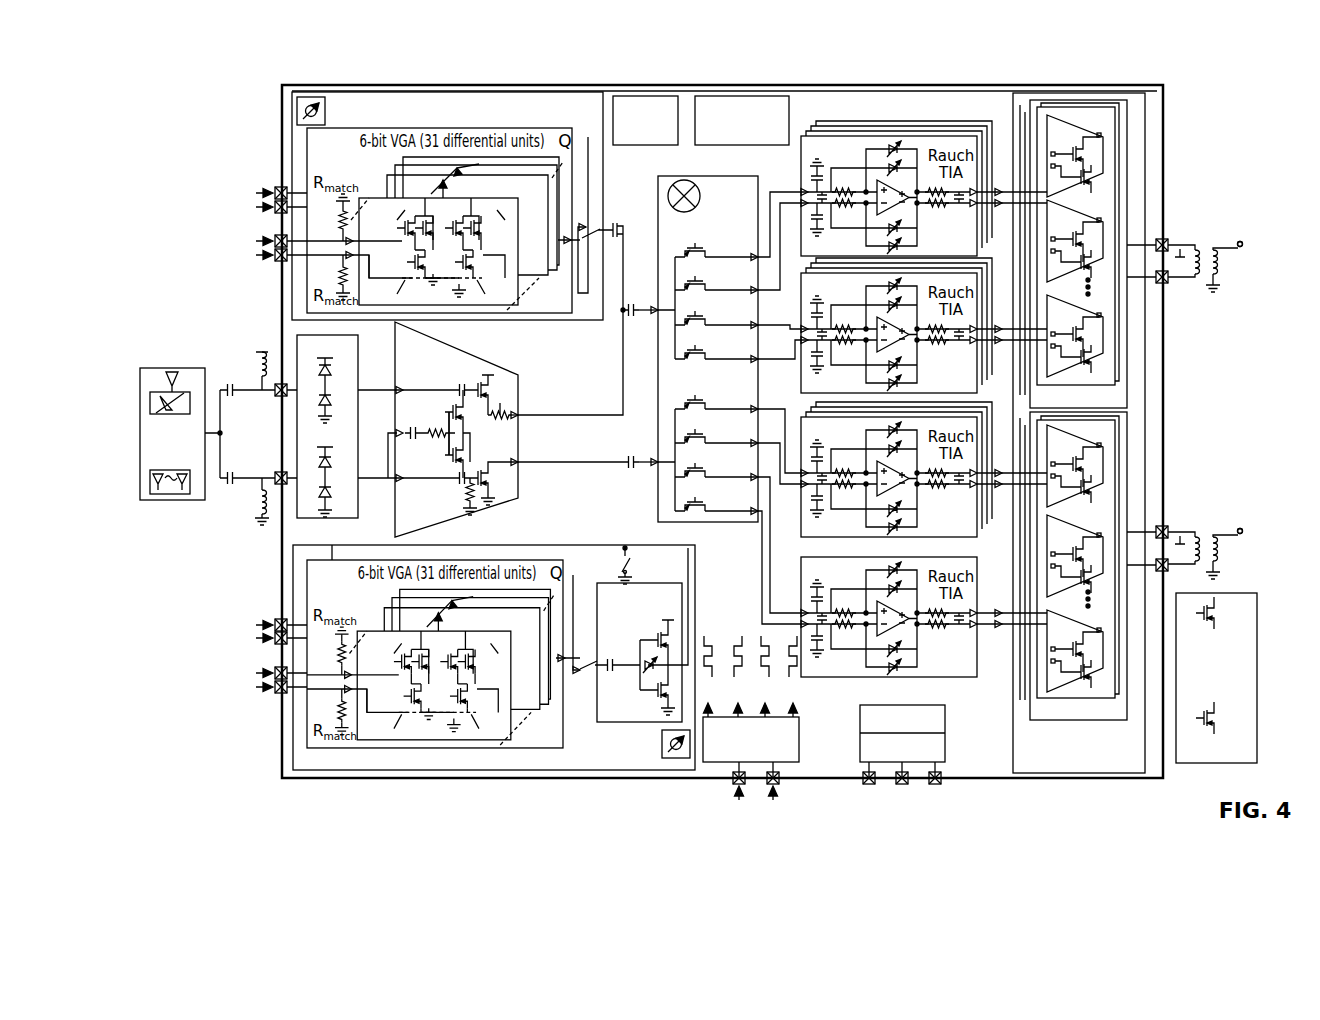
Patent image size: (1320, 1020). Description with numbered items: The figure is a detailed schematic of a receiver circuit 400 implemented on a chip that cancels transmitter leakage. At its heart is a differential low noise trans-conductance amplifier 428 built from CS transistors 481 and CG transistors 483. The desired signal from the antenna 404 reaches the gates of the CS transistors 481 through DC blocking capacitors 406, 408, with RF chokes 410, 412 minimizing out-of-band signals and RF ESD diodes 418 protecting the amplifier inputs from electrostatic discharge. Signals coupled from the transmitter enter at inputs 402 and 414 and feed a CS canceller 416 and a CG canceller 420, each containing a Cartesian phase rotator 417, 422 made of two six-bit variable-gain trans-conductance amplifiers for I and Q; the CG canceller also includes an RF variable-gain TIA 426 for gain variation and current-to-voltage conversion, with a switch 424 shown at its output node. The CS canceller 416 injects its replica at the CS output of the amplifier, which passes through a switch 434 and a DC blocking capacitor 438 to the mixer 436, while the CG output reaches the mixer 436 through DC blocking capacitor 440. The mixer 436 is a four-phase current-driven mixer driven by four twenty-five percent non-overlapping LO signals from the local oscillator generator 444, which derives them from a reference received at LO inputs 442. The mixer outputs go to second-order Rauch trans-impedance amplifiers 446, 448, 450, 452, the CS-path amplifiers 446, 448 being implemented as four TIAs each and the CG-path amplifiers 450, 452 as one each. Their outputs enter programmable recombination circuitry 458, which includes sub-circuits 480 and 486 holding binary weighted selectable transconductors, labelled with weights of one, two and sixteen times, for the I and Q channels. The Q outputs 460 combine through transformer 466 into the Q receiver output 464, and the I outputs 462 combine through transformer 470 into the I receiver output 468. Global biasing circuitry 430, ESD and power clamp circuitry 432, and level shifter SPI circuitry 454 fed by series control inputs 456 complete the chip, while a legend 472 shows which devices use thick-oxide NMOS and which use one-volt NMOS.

The receiver circuit 400 is at (218, 84).
The CS canceller TX-coupled inputs 402 is at (225, 202).
The antenna 404 is at (140, 368).
The DC blocking capacitor 406 is at (228, 386).
The DC blocking capacitor 408 is at (228, 482).
The RF choke 410 is at (262, 352).
The RF choke 412 is at (262, 518).
The CG canceller TX-coupled inputs 414 is at (228, 638).
The CS canceller 416 is at (451, 179).
The Cartesian phase rotator 417 is at (543, 126).
The RF ESD diodes 418 is at (295, 338).
The CG canceller 420 is at (494, 661).
The Cartesian phase rotator 422 is at (387, 749).
The switch 424 is at (622, 552).
The RF variable-gain TIA 426 is at (620, 724).
The low noise trans-conductance amplifier 428 is at (487, 430).
The global biasing circuitry 430 is at (638, 96).
The ESD and power clamp circuitry 432 is at (757, 96).
The switch transistor 434 is at (616, 225).
The mixer 436 is at (698, 177).
The DC blocking capacitor 438 is at (622, 313).
The DC blocking capacitor 440 is at (622, 462).
The LO inputs 442 is at (733, 785).
The local oscillator generator 444 is at (802, 736).
The Rauch trans-impedance amplifier 446 is at (929, 122).
The Rauch trans-impedance amplifier 448 is at (800, 363).
The Rauch trans-impedance amplifier 450 is at (977, 442).
The Rauch trans-impedance amplifier 452 is at (975, 592).
The level shifter and SPI circuitry 454 is at (945, 714).
The inputs 456 is at (903, 784).
The programmable recombination circuitry 458 is at (1097, 409).
The outputs 460 is at (1168, 283).
The outputs 462 is at (1168, 525).
The Q receiver output 464 is at (1242, 246).
The transformer 466 is at (1223, 266).
The I receiver output 468 is at (1242, 533).
The transformer 470 is at (1224, 553).
The legend 472 is at (1192, 764).
The sub-circuit 480 is at (1127, 143).
The CS transistor 481 is at (520, 480).
The CG transistor 483 is at (450, 432).
The sub-circuit 486 is at (1038, 716).